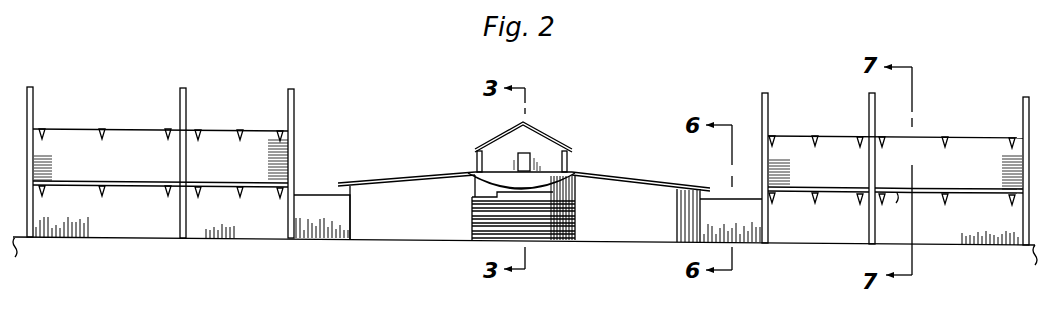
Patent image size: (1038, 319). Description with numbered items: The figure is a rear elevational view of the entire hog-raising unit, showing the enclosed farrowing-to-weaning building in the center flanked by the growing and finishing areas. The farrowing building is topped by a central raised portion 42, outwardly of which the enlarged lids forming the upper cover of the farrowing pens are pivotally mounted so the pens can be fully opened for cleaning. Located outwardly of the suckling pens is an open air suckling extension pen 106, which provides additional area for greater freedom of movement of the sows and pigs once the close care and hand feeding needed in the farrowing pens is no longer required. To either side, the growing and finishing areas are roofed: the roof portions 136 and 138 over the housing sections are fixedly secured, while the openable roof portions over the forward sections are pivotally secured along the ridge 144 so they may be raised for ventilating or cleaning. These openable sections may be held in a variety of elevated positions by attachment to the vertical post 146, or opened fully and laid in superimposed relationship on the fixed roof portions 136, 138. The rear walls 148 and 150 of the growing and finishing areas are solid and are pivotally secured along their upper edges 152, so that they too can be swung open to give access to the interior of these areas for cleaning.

The central raised portion 42 is at (536, 124).
The open air suckling extension pen 106 is at (301, 205).
The roof portion 136 is at (816, 160).
The roof portion 138 is at (950, 163).
The ridge 144 is at (793, 133).
The vertical post 146 is at (294, 106).
The rear wall 148 is at (818, 208).
The rear wall 150 is at (967, 217).
The upper edge 152 is at (896, 209).